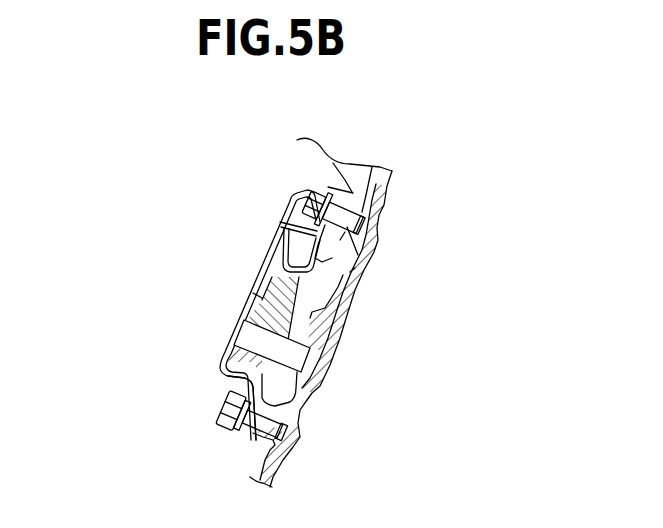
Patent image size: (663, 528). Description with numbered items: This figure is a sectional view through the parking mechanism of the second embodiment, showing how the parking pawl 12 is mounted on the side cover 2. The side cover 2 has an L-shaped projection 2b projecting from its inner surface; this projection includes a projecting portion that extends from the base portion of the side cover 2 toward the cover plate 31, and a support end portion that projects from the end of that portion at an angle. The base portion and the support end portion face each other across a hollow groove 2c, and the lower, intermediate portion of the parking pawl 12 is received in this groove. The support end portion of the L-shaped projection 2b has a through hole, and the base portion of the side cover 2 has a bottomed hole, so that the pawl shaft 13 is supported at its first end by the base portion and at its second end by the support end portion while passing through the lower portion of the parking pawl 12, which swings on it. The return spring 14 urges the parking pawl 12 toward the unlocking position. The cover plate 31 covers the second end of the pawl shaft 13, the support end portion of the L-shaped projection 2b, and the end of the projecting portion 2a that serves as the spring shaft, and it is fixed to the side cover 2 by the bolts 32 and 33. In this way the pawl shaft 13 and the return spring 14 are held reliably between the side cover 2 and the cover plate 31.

The side cover 2 is at (310, 394).
The projecting portion 2a is at (340, 240).
The L-shaped projection 2b is at (228, 350).
The hollow groove 2c is at (226, 379).
The parking pawl 12 is at (297, 258).
The pawl shaft 13 is at (308, 356).
The return spring 14 is at (350, 272).
The cover plate 31 is at (253, 293).
The bolt 32 is at (316, 188).
The bolt 33 is at (230, 418).